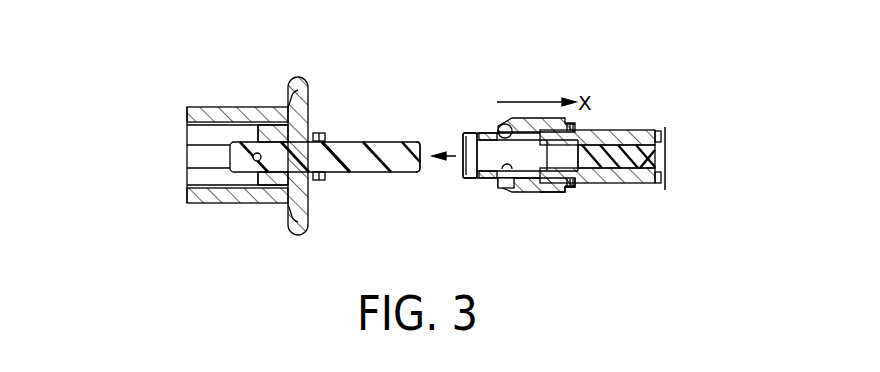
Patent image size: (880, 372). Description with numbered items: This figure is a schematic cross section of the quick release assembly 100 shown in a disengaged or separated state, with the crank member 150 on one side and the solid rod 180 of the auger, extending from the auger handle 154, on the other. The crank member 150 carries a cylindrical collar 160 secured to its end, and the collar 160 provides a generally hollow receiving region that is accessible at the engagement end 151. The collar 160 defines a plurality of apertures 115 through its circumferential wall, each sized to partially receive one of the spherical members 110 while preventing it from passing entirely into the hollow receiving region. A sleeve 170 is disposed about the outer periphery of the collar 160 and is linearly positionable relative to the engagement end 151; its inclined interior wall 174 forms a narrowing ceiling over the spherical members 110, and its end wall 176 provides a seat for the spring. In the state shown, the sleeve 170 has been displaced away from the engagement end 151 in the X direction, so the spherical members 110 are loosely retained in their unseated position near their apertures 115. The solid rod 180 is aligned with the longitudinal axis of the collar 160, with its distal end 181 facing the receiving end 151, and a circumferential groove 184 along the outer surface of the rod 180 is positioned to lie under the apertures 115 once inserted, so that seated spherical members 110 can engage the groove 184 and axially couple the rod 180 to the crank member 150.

The quick release assembly 100 is at (112, 86).
The spherical members 110 is at (496, 124).
The apertures 115 is at (500, 170).
The crank member 150 is at (664, 160).
The engagement end 151 is at (466, 130).
The auger handle 154 is at (213, 107).
The collar 160 is at (621, 130).
The sleeve 170 is at (538, 193).
The inclined interior wall 174 is at (518, 193).
The end wall 176 is at (554, 193).
The solid rod 180 is at (383, 173).
The distal end 181 is at (418, 141).
The circumferential groove 184 is at (351, 141).